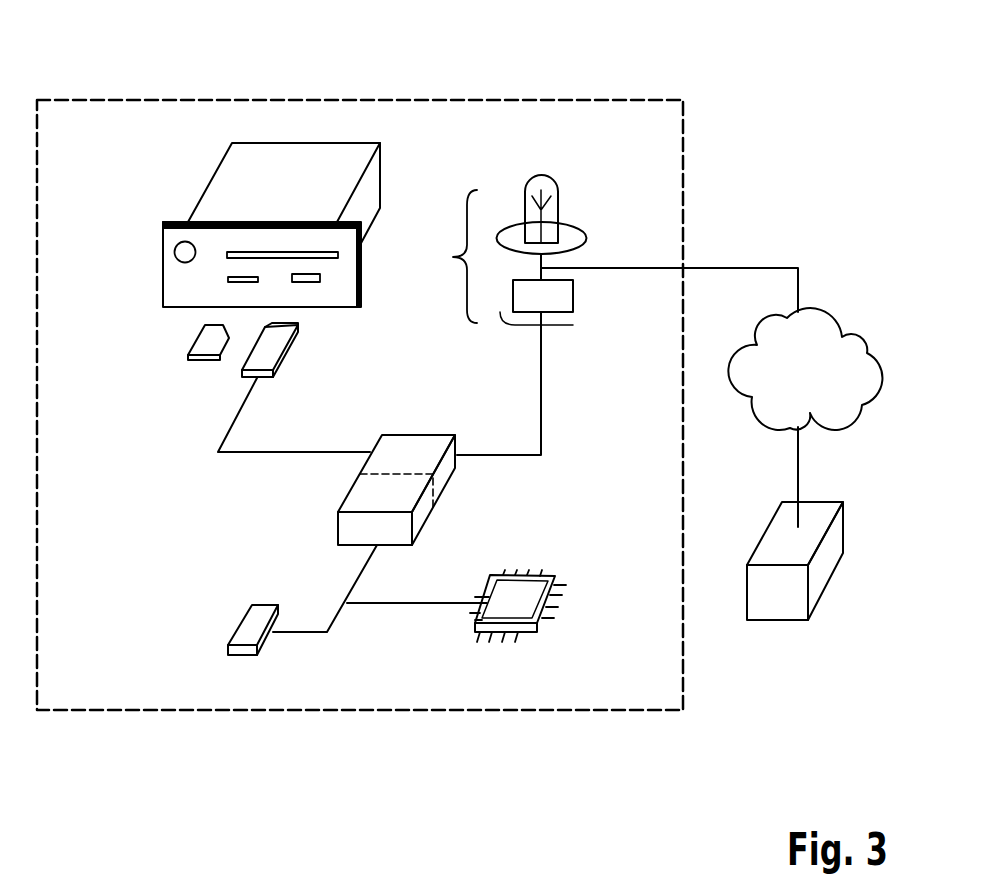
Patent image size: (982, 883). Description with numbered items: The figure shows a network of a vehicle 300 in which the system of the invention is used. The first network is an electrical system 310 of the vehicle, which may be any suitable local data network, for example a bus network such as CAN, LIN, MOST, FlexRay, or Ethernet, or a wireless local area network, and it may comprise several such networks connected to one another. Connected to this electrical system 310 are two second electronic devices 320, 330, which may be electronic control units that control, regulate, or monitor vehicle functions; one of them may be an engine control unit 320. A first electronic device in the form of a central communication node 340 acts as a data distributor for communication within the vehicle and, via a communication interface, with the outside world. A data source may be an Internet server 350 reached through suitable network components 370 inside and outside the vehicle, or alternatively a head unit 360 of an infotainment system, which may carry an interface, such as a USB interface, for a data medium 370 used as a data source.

The vehicle 300 is at (445, 122).
The electrical system 310 is at (555, 205).
The second electronic device 320 is at (518, 602).
The second electronic device 330 is at (253, 627).
The central communication node 340 is at (370, 496).
The Internet server 350 is at (777, 608).
The head unit 360 is at (233, 193).
The data medium 370 is at (205, 349).